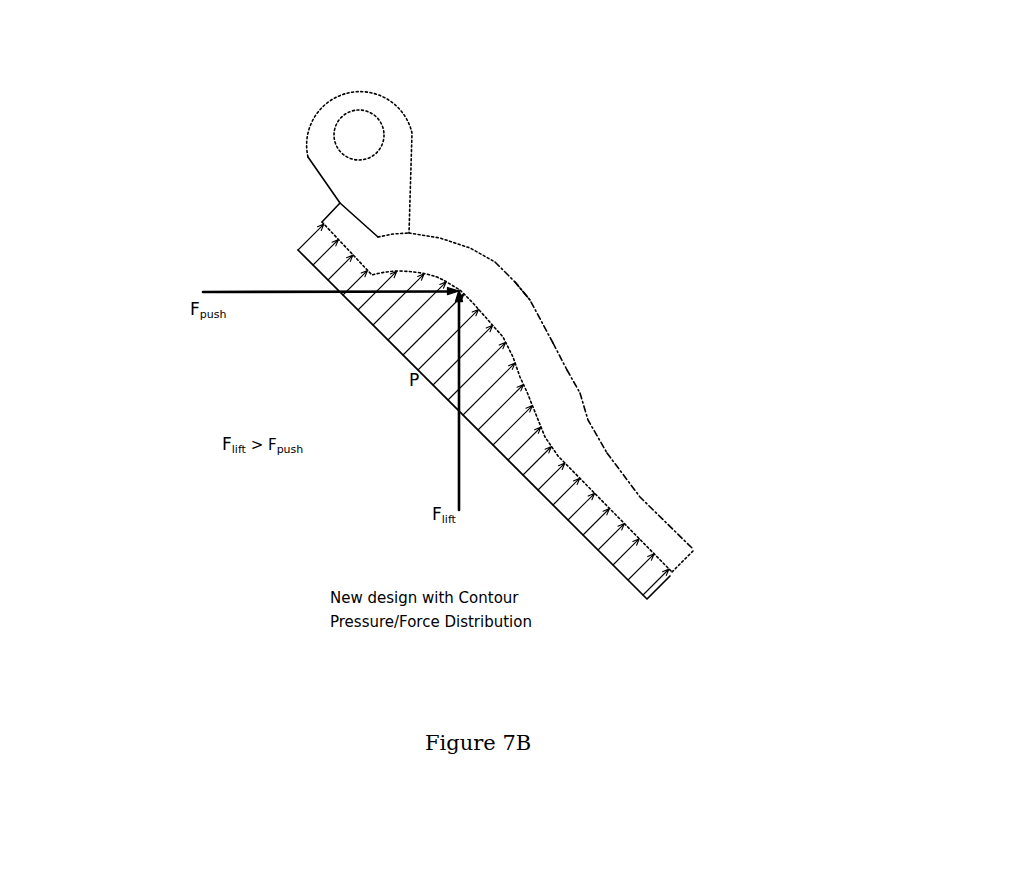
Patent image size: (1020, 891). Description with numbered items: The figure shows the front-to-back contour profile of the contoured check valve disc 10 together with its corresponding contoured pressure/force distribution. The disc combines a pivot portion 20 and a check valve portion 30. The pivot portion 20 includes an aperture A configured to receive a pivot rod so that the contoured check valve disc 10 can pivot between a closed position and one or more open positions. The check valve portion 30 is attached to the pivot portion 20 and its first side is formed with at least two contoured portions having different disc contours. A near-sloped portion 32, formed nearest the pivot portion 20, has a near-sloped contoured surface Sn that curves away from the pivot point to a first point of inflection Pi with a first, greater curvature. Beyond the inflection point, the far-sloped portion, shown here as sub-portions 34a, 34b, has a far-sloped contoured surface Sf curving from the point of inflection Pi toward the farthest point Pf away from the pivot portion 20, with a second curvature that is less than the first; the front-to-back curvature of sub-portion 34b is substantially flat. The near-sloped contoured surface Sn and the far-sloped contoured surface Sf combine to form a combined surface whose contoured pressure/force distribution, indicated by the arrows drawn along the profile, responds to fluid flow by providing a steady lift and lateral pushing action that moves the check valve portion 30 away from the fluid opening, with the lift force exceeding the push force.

The contoured check valve disc 10 is at (206, 114).
The pivot portion 20 is at (390, 110).
The aperture A is at (370, 136).
The check valve portion 30 is at (467, 247).
The near-sloped portion 32 is at (503, 296).
The near-sloped contoured surface Sn is at (514, 315).
The first point of inflection Pi is at (553, 360).
The far-sloped contoured surface Sf is at (553, 416).
The far-sloped sub-portion 34a is at (568, 442).
The far-sloped sub-portion 34b is at (631, 503).
The farthest point Pf is at (690, 560).